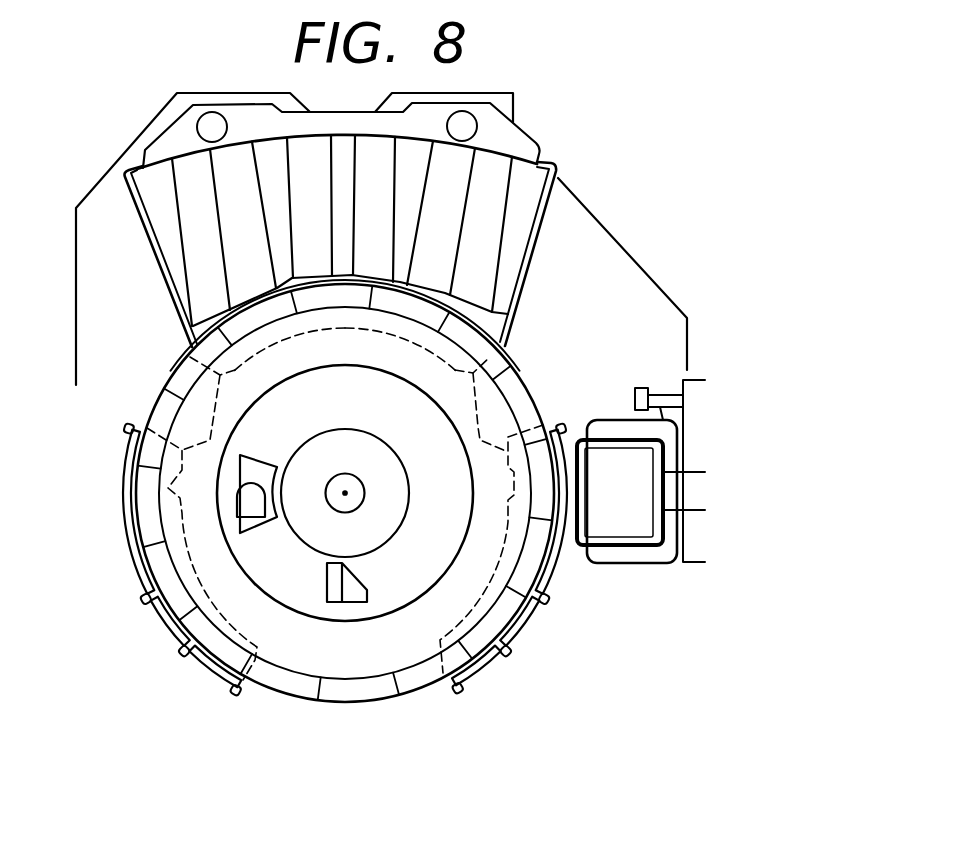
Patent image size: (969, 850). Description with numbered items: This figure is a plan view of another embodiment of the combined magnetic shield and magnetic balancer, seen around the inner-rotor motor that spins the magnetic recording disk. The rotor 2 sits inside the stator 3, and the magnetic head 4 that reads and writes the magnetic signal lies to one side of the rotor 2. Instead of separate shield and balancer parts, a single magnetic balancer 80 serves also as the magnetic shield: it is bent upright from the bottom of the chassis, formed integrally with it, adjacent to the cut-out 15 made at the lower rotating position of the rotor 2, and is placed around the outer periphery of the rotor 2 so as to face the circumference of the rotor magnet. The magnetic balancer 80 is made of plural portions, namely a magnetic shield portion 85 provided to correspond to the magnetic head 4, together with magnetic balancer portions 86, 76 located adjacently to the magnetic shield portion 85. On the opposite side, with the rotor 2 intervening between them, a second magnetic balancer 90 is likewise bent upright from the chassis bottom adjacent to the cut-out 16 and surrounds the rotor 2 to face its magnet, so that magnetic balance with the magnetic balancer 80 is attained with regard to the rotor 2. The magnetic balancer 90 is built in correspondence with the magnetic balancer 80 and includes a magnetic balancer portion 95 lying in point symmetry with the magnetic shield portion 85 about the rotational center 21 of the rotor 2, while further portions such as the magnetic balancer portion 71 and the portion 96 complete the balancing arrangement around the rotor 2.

The rotor 2 is at (355, 704).
The stator 3 is at (565, 156).
The magnetic head 4 is at (678, 578).
The cut-out 15 is at (444, 500).
The cut-out 16 is at (246, 504).
The rotational center 21 is at (345, 492).
The magnetic balancer portion 71 is at (166, 646).
The magnetic balancer portion 76 is at (492, 672).
The magnetic balancer 80 is at (581, 605).
The magnetic shield portion 85 is at (563, 565).
The magnetic balancer portion 86 is at (532, 628).
The magnetic balancer 90 is at (141, 590).
The magnetic balancer portion 95 is at (123, 512).
The middle segment of left band 96 is at (158, 623).